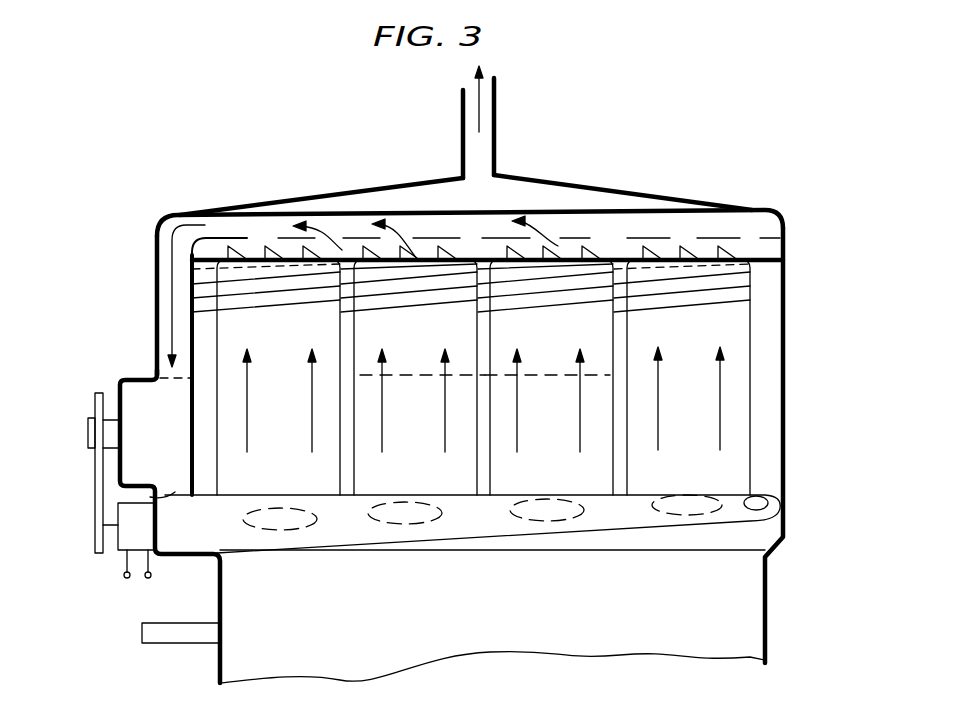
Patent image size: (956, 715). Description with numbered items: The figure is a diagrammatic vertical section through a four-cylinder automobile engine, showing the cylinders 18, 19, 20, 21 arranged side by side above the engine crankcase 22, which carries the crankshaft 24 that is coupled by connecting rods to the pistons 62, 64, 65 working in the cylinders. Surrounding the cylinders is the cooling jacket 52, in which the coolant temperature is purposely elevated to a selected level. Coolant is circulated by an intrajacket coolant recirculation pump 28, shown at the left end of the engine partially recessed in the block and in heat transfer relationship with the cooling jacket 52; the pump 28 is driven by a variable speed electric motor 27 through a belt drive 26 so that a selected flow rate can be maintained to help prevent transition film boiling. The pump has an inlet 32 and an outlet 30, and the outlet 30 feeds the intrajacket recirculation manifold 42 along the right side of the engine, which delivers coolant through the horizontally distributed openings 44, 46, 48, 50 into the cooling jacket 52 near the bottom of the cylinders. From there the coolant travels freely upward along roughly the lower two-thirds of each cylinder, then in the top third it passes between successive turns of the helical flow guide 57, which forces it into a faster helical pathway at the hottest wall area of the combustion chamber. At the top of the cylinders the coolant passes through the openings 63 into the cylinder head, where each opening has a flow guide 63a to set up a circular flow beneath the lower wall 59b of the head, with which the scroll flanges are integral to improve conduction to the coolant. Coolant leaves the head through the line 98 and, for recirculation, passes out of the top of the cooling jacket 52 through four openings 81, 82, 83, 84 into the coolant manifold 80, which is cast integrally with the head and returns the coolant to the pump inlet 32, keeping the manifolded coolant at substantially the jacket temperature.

The cylinder 18 is at (265, 440).
The cylinder 19 is at (404, 437).
The cylinder 20 is at (533, 436).
The cylinder 21 is at (677, 436).
The engine crankcase 22 is at (465, 640).
The crankshaft 24 is at (183, 633).
The belt drive 26 is at (97, 500).
The variable speed electric motor 27 is at (133, 545).
The intrajacket coolant recirculation pump 28 is at (136, 378).
The pump outlet 30 is at (150, 497).
The pump inlet 32 is at (152, 333).
The manifold 42 is at (180, 537).
The opening 44 is at (280, 530).
The opening 46 is at (400, 525).
The opening 48 is at (557, 523).
The opening 50 is at (692, 516).
The cooling jacket 52 is at (768, 348).
The helical flow guide 57 is at (578, 293).
The lower wall of the cylinder head 59b is at (481, 258).
The piston 62 is at (307, 268).
The opening 63 is at (409, 373).
The flow guide 63a is at (601, 256).
The piston 64 is at (541, 373).
The piston 65 is at (692, 268).
The coolant manifold 80 is at (180, 216).
The opening 81 is at (259, 238).
The opening 82 is at (403, 233).
The opening 83 is at (547, 233).
The opening 84 is at (621, 233).
The line 98 is at (472, 143).